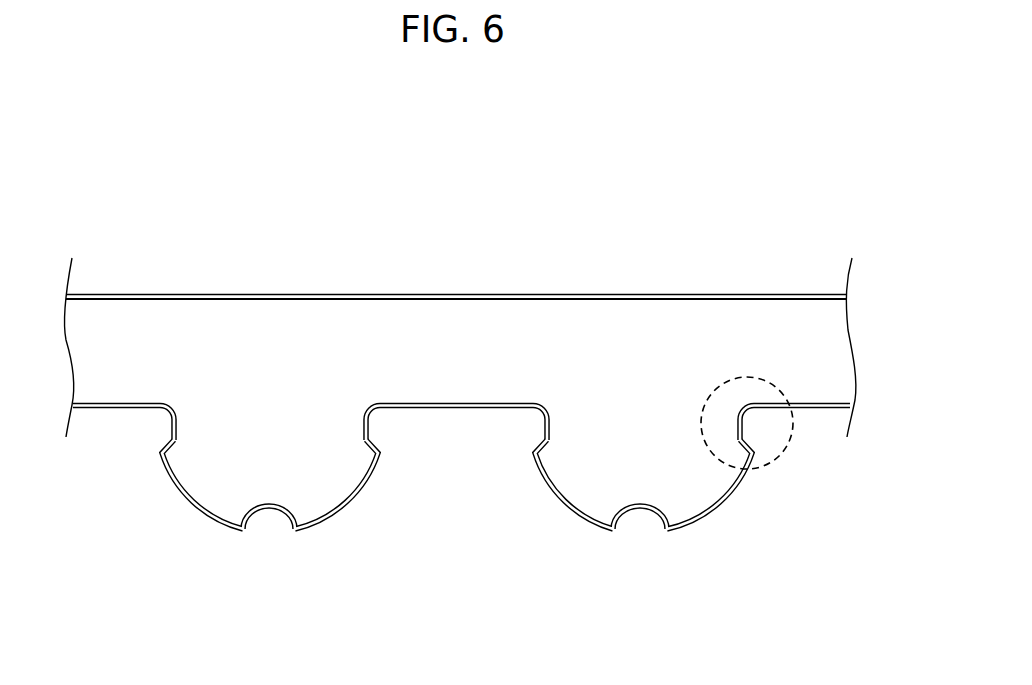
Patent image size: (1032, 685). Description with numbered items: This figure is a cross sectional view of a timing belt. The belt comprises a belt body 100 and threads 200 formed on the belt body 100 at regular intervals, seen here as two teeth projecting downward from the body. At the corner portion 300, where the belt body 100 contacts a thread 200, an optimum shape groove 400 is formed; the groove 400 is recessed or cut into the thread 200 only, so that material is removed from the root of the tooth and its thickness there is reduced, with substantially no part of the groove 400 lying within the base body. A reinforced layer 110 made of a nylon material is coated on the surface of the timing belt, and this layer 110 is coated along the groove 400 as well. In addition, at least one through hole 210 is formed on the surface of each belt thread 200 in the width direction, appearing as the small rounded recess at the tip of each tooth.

The belt body 100 is at (558, 312).
The reinforced layer 110 is at (697, 297).
The thread 200 is at (572, 486).
The through hole 210 is at (640, 508).
The corner portion 300 is at (790, 393).
The groove 400 is at (740, 428).